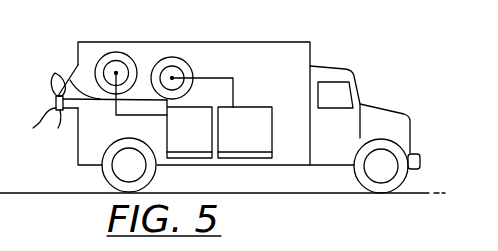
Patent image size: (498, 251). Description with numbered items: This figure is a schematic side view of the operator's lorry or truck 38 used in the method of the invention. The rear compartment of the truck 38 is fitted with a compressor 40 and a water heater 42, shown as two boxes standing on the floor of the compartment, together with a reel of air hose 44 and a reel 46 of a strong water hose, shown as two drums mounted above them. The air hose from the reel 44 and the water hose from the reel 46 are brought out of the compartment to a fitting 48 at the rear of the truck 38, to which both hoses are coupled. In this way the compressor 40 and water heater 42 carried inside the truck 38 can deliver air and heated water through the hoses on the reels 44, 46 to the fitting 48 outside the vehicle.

The truck 38 is at (114, 32).
The reel of water hose 46 is at (174, 57).
The reel of air hose 44 is at (98, 72).
The fitting 48 is at (58, 128).
The compressor 40 is at (196, 145).
The water heater 42 is at (254, 145).